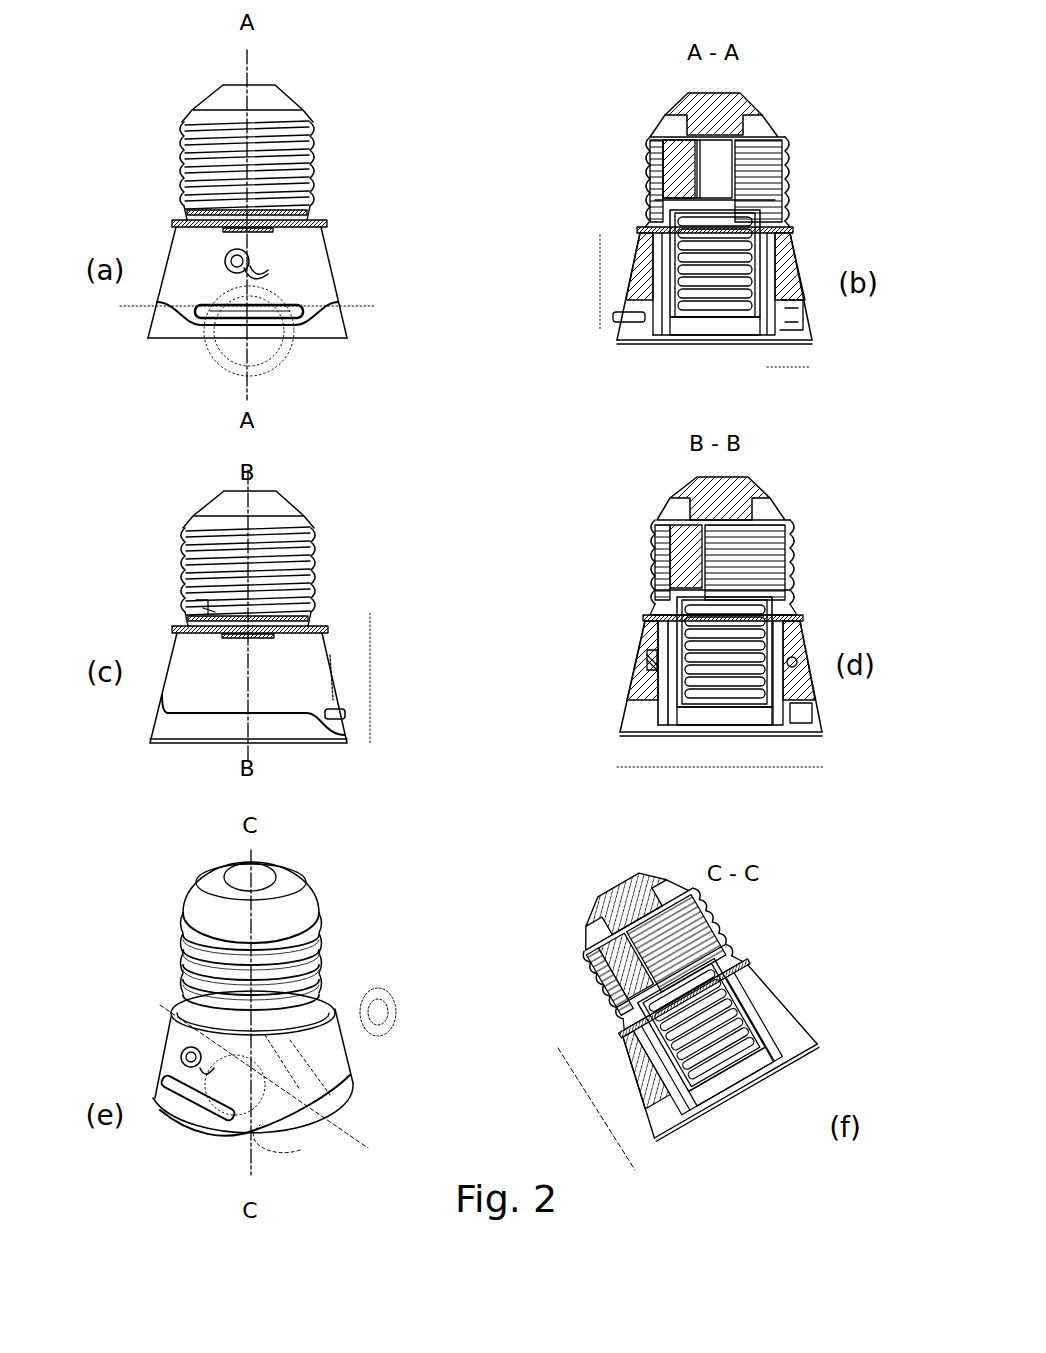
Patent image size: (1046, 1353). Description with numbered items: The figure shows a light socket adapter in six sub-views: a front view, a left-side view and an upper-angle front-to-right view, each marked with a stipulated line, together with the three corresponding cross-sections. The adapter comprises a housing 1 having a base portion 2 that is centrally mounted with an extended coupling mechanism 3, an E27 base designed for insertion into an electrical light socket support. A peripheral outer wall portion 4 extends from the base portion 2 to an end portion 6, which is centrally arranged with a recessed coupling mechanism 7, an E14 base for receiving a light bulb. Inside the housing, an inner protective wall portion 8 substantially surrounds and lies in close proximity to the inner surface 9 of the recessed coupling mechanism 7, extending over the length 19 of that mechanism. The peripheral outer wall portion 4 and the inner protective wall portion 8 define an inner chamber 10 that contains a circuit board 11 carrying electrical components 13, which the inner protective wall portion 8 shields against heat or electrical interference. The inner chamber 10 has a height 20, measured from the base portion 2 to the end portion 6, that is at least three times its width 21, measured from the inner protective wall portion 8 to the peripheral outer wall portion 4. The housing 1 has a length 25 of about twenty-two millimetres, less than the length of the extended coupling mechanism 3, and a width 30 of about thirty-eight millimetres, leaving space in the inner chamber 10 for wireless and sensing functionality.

The housing 1 is at (307, 263).
The base portion 2 is at (172, 221).
The extended coupling mechanism 3 is at (300, 155).
The peripheral outer wall portion 4 is at (775, 250).
The end portion 6 is at (172, 340).
The recessed coupling mechanism 7 is at (715, 245).
The inner protective wall portion 8 is at (783, 218).
The inner surface 9 is at (792, 606).
The inner chamber 10 is at (655, 690).
The circuit board 11 is at (778, 290).
The electrical components 13 is at (650, 260).
The length 19 is at (592, 1109).
The height 20 is at (575, 282).
The width 21 is at (815, 373).
The length 25 is at (391, 679).
The width 30 is at (742, 769).